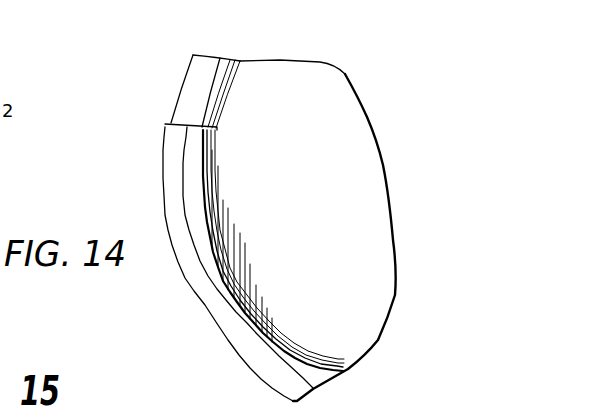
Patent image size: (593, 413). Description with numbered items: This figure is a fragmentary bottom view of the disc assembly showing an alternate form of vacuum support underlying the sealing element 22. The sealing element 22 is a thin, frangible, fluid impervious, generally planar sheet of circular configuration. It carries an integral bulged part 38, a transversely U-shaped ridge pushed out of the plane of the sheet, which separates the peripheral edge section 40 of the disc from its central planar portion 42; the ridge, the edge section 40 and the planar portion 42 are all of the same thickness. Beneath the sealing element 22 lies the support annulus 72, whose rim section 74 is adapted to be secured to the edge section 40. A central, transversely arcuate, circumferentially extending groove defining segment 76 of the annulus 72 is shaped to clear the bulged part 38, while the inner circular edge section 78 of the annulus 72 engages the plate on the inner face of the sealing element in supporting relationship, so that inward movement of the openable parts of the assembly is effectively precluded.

The sealing element 22 is at (279, 31).
The bulged part 38 is at (215, 83).
The peripheral edge section 40 is at (193, 78).
The central planar portion 42 is at (355, 197).
The annulus 72 is at (256, 374).
The rim section 74 is at (215, 316).
The groove defining segment 76 is at (213, 281).
The inner circular edge section 78 is at (207, 153).